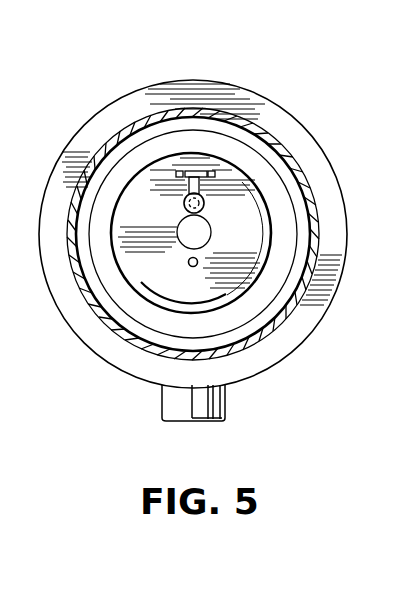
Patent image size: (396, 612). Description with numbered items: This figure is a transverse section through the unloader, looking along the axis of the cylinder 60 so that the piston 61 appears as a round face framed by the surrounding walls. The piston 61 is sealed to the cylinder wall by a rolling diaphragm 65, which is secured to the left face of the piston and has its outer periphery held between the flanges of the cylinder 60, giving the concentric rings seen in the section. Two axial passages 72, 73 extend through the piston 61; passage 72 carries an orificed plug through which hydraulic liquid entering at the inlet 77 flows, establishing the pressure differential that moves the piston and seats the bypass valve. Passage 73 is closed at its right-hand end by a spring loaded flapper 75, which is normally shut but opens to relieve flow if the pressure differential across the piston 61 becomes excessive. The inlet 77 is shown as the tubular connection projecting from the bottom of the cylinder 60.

The cylinder 60 is at (295, 160).
The piston 61 is at (232, 163).
The rolling diaphragm 65 is at (147, 148).
The axial passage 72 is at (188, 264).
The axial passage 73 is at (184, 203).
The spring loaded flapper 75 is at (205, 205).
The inlet 77 is at (172, 407).